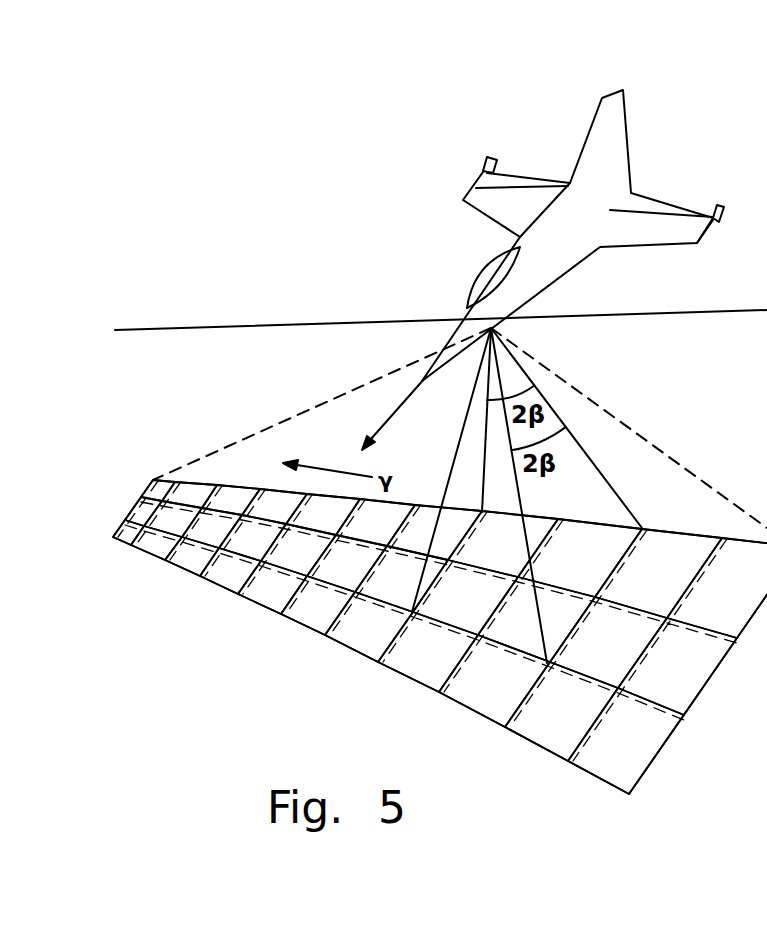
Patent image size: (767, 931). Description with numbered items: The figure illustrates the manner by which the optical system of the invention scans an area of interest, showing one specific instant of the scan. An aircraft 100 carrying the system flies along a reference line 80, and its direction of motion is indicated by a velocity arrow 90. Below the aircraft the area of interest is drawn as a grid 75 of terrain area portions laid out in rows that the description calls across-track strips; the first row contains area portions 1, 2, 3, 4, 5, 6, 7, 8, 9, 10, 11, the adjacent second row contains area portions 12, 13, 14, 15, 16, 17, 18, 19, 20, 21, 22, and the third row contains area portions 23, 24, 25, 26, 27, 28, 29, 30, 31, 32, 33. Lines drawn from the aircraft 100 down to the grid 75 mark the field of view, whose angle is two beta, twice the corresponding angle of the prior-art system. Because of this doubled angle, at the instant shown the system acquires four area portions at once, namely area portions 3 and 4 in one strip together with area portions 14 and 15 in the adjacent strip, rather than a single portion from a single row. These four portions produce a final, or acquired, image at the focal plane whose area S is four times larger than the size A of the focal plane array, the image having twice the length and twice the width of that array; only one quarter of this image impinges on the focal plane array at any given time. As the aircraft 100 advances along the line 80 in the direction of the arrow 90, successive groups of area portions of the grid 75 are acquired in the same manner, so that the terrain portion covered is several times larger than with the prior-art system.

The aircraft 100 is at (590, 122).
The flight path reference line 80 is at (437, 320).
The aircraft velocity vector 90 is at (402, 402).
The ground footprint grid of beam cells 75 is at (137, 505).
The beam footprint cell 1 is at (717, 588).
The beam footprint cell 2 is at (658, 573).
The area portion 3 is at (580, 558).
The area portion 4 is at (503, 544).
The beam footprint cell 5 is at (434, 532).
The beam footprint cell 6 is at (375, 522).
The beam footprint cell 7 is at (323, 514).
The beam footprint cell 8 is at (274, 506).
The beam footprint cell 9 is at (231, 500).
The beam footprint cell 10 is at (189, 495).
The beam footprint cell 11 is at (158, 490).
The beam footprint cell 12 is at (677, 666).
The beam footprint cell 13 is at (608, 642).
The area portion 14 is at (536, 619).
The area portion 15 is at (465, 597).
The beam footprint cell 16 is at (401, 579).
The beam footprint cell 17 is at (347, 563).
The beam footprint cell 18 is at (298, 550).
The beam footprint cell 19 is at (252, 538).
The beam footprint cell 20 is at (212, 528).
The beam footprint cell 21 is at (173, 519).
The beam footprint cell 22 is at (143, 511).
The beam footprint cell 23 is at (626, 741).
The beam footprint cell 24 is at (561, 711).
The beam footprint cell 25 is at (494, 681).
The beam footprint cell 26 is at (428, 652).
The beam footprint cell 27 is at (369, 627).
The beam footprint cell 28 is at (318, 605).
The beam footprint cell 29 is at (272, 587).
The beam footprint cell 30 is at (230, 571).
The beam footprint cell 31 is at (192, 556).
The beam footprint cell 32 is at (156, 543).
The beam footprint cell 33 is at (128, 532).